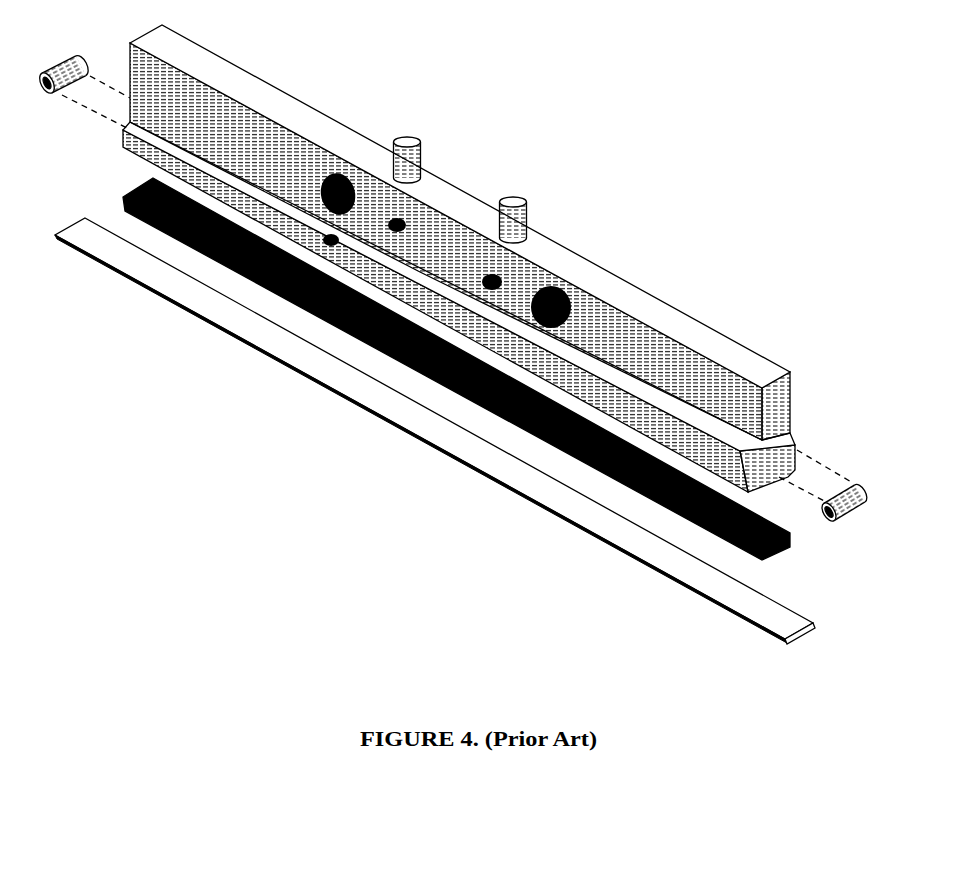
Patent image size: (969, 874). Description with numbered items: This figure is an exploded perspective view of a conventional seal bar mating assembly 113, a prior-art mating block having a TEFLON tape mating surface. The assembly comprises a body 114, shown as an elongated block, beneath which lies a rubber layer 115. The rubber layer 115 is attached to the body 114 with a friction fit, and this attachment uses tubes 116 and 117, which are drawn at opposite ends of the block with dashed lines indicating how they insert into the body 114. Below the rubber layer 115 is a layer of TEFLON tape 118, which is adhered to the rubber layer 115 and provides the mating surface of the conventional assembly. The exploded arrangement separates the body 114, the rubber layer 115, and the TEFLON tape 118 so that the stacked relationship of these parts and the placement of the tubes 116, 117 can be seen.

The seal bar mating assembly 113 is at (632, 117).
The body 114 is at (623, 282).
The rubber layer 115 is at (780, 553).
The tube 116 is at (75, 53).
The tube 117 is at (857, 485).
The layer of TEFLON tape 118 is at (797, 637).